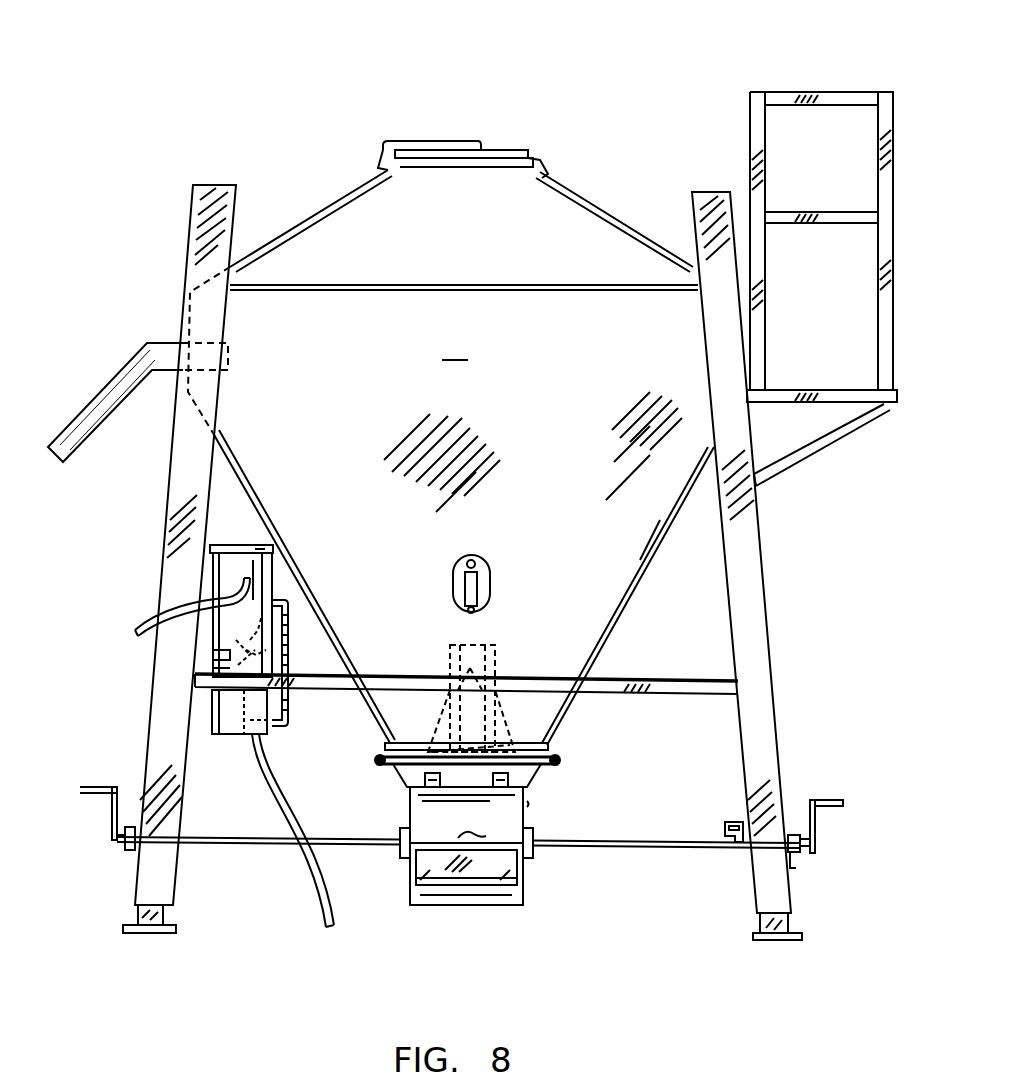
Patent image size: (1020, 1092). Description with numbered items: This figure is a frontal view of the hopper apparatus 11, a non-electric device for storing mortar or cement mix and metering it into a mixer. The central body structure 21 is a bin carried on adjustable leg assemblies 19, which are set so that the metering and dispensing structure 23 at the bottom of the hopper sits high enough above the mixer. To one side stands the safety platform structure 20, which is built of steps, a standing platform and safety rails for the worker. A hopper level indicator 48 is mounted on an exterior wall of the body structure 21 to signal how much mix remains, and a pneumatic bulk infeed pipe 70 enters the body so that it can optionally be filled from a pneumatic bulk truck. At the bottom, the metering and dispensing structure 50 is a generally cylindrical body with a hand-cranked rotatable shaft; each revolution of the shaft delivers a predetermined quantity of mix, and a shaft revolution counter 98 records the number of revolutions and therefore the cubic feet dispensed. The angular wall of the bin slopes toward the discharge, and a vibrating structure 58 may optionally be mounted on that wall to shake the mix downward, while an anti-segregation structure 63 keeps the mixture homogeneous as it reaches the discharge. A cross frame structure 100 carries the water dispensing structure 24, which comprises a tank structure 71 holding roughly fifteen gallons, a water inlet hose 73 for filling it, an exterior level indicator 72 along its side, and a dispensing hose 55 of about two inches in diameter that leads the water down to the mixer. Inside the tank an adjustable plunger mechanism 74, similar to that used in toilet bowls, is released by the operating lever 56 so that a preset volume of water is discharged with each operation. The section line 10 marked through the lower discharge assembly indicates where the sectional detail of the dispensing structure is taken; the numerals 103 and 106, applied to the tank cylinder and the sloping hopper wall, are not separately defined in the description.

The section line 10 is at (432, 627).
The hopper apparatus 11 is at (664, 76).
The adjustable leg assemblies 19 is at (772, 606).
The safety platform structure 20 is at (886, 424).
The body structure 21 is at (463, 464).
The metering and dispensing structure 23 is at (530, 888).
The water dispensing structure 24 is at (208, 650).
The hopper level indicator 48 is at (490, 556).
The metering and dispensing structure 50 is at (540, 820).
The dispensing hose 55 is at (314, 885).
The operating lever 56 is at (218, 666).
The vibrating structure 58 is at (502, 658).
The anti-segregation structure 63 is at (515, 736).
The pneumatic bulk infeed pipe 70 is at (112, 380).
The tank structure 71 is at (210, 722).
The exterior level indicator 72 is at (285, 700).
The water inlet hose 73 is at (150, 612).
The adjustable plunger mechanism 74 is at (258, 655).
The shaft revolution counter 98 is at (727, 822).
The frame structure 100 is at (358, 694).
The pump cylinder 103 is at (252, 545).
The hopper cone wall 106 is at (646, 553).